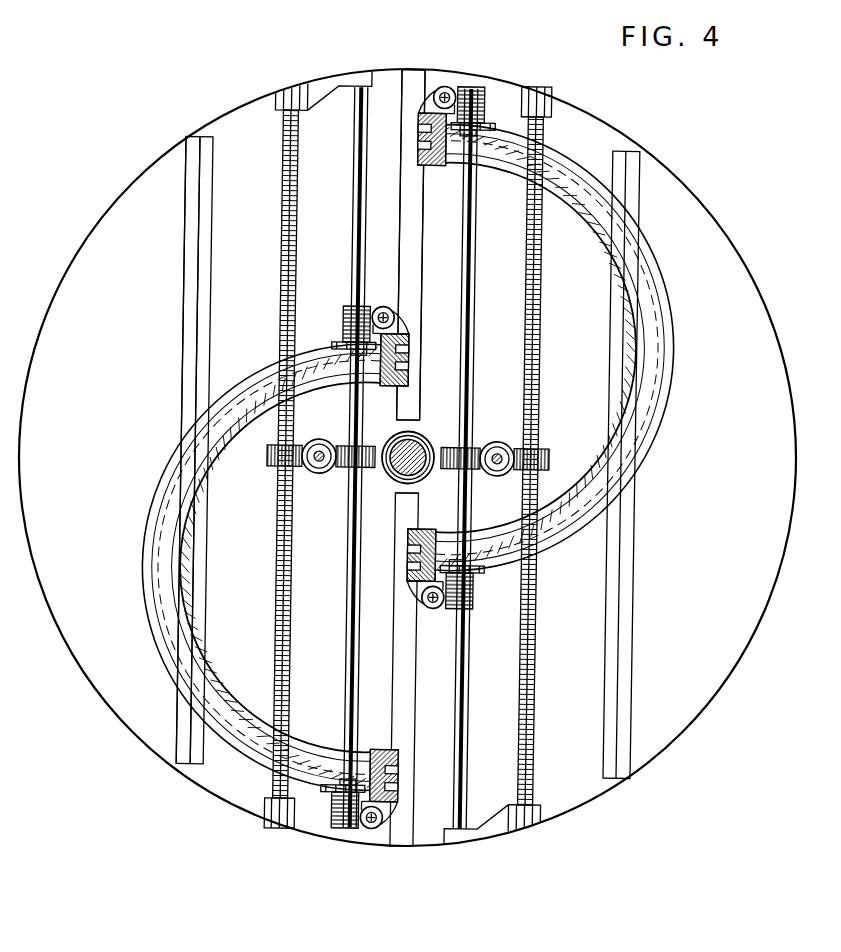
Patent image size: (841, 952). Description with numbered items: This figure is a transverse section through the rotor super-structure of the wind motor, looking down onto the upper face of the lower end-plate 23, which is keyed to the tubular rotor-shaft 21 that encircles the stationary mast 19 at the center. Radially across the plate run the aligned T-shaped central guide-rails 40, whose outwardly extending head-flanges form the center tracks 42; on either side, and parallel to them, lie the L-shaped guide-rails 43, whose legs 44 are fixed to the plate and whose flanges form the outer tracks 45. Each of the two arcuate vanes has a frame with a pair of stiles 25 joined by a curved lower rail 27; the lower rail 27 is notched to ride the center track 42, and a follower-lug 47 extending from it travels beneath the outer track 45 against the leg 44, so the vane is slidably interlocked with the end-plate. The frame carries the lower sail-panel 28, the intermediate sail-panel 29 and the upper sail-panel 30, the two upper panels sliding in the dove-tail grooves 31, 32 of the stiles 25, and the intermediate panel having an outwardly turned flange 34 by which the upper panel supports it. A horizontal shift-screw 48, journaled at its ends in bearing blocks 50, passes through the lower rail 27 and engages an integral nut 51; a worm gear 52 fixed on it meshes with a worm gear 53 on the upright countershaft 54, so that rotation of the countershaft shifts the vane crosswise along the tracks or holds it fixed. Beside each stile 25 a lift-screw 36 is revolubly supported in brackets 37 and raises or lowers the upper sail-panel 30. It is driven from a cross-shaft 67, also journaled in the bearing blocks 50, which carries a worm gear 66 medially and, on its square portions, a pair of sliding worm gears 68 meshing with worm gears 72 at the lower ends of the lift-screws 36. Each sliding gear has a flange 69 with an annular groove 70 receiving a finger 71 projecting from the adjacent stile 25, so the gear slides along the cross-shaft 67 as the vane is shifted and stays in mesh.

The mast 19 is at (397, 445).
The tubular rotor-shaft 21 is at (425, 437).
The lower end-plate 23 is at (133, 712).
The stiles 25 is at (414, 160).
The lower rail 27 is at (592, 289).
The lower sail-panel 28 is at (520, 178).
The intermediate sail-panel 29 is at (573, 247).
The upper sail-panel 30 is at (545, 192).
The groove 31 is at (415, 140).
The groove 32 is at (415, 127).
The outwardly turned flange 34 is at (540, 176).
The lift-screw 36 is at (452, 90).
The brackets 37 is at (417, 105).
The central guide-rails 40 is at (417, 68).
The center tracks 42 is at (420, 230).
The guide-rails 43 is at (198, 212).
The legs 44 is at (188, 320).
The outer tracks 45 is at (205, 262).
The follower-lug 47 is at (627, 356).
The shift-screw 48 is at (293, 640).
The bearing blocks 50 is at (322, 82).
The nut 51 is at (533, 218).
The worm gear 52 is at (273, 462).
The worm gear 53 is at (322, 443).
The upright countershaft 54 is at (318, 470).
The worm gear 66 is at (386, 468).
The cross-shaft 67 is at (473, 298).
The sliding worm gears 68 is at (482, 95).
The flange 69 is at (492, 127).
The annular groove 70 is at (488, 118).
The finger 71 is at (462, 133).
The worm gear 72 is at (435, 80).